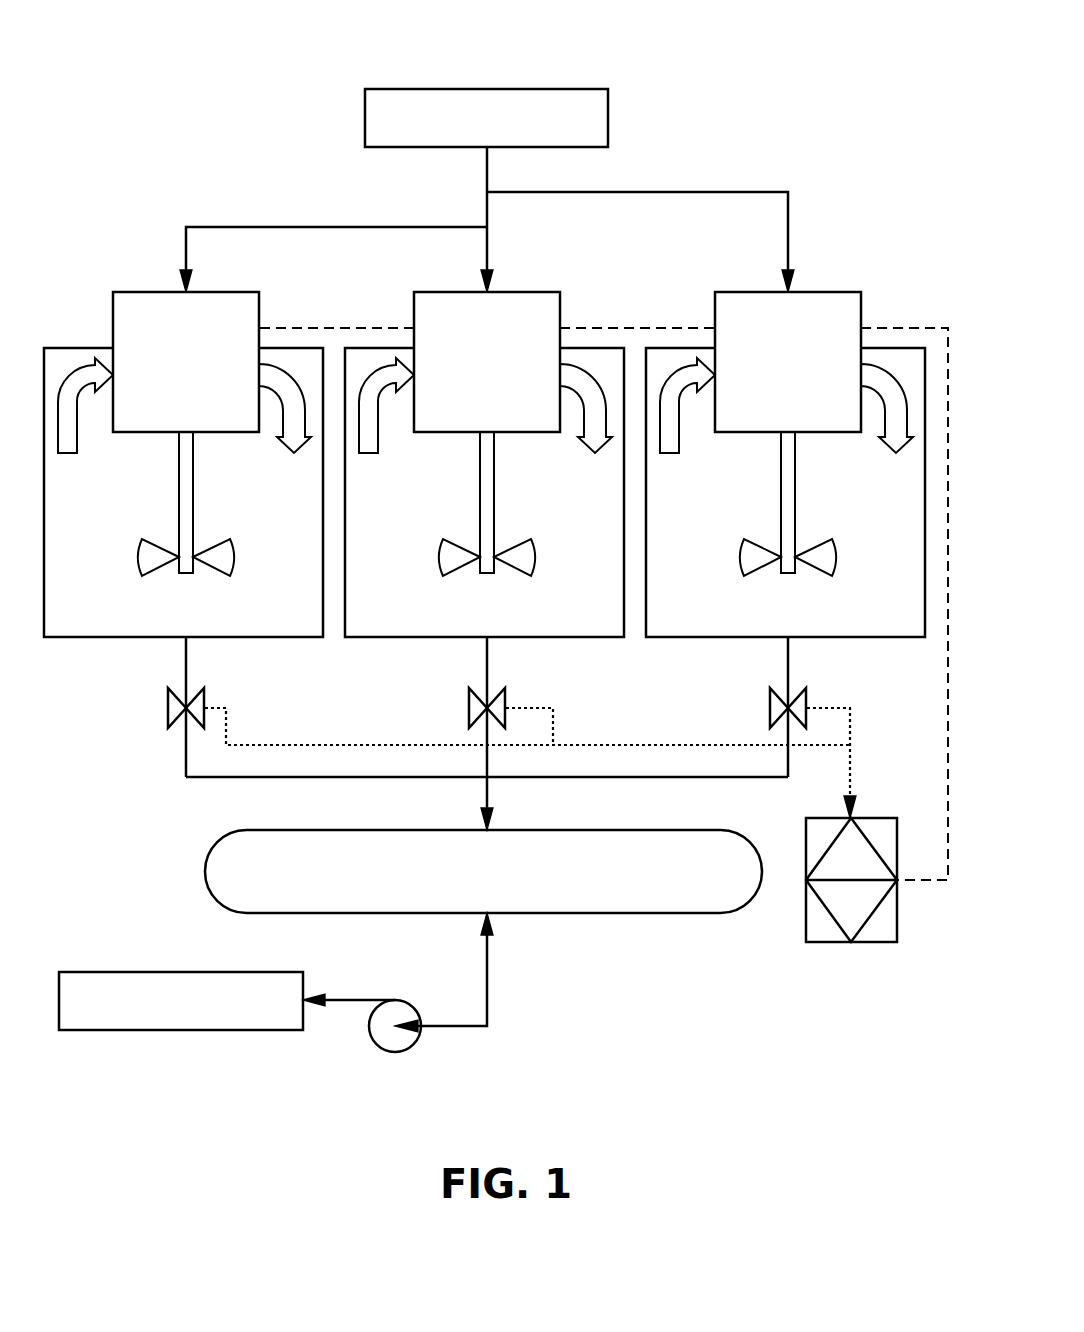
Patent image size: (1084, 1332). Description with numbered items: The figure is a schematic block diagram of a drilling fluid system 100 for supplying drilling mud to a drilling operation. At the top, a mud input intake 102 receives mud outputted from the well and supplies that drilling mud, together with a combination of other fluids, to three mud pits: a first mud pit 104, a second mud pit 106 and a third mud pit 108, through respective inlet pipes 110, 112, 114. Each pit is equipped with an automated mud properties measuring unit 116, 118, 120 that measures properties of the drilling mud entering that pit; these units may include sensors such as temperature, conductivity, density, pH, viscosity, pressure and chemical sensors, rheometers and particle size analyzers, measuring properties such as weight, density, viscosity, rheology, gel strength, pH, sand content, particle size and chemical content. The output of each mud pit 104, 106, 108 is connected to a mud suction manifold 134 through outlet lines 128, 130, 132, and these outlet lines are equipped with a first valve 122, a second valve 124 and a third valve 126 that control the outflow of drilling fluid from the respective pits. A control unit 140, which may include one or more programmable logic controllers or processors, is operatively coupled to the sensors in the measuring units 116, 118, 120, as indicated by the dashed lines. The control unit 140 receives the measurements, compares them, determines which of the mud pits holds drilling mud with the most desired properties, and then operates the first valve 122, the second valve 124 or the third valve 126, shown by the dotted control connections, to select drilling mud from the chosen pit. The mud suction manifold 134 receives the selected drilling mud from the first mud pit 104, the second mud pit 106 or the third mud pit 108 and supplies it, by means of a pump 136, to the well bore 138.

The drilling fluid system 100 is at (738, 72).
The mud input intake 102 is at (537, 89).
The first mud pit 104 is at (285, 348).
The second mud pit 106 is at (586, 348).
The third mud pit 108 is at (885, 347).
The inlet pipe 110 is at (207, 227).
The inlet pipe 112 is at (486, 257).
The inlet pipe 114 is at (705, 192).
The automated mud properties measuring unit 116 is at (207, 292).
The automated mud properties measuring unit 118 is at (508, 290).
The automated mud properties measuring unit 120 is at (810, 292).
The first valve 122 is at (203, 696).
The second valve 124 is at (504, 696).
The third valve 126 is at (806, 696).
The outlet line 128 is at (312, 777).
The outlet line 130 is at (487, 792).
The outlet line 132 is at (617, 777).
The mud suction manifold 134 is at (660, 913).
The pump 136 is at (398, 1007).
The well bore 138 is at (173, 972).
The control unit 140 is at (863, 818).